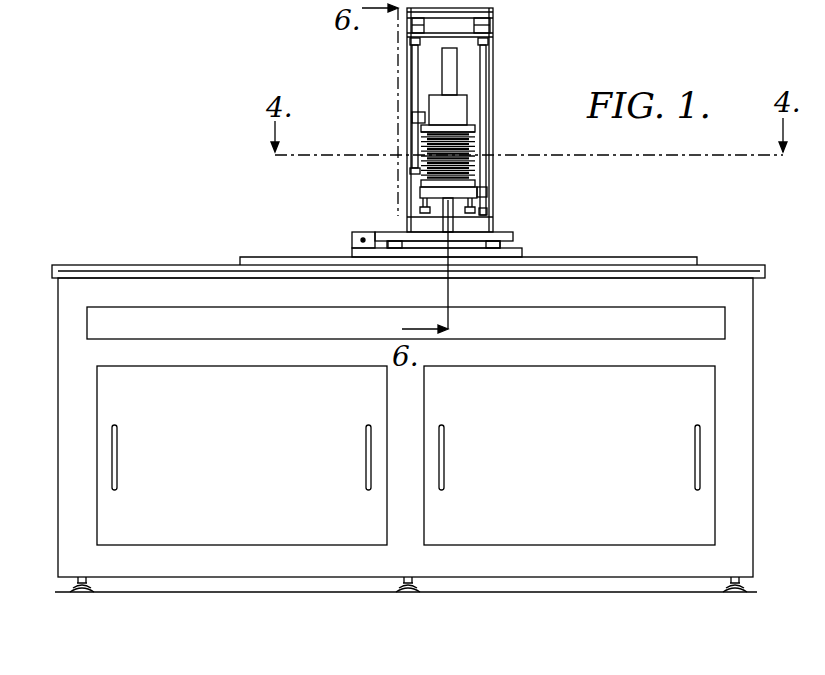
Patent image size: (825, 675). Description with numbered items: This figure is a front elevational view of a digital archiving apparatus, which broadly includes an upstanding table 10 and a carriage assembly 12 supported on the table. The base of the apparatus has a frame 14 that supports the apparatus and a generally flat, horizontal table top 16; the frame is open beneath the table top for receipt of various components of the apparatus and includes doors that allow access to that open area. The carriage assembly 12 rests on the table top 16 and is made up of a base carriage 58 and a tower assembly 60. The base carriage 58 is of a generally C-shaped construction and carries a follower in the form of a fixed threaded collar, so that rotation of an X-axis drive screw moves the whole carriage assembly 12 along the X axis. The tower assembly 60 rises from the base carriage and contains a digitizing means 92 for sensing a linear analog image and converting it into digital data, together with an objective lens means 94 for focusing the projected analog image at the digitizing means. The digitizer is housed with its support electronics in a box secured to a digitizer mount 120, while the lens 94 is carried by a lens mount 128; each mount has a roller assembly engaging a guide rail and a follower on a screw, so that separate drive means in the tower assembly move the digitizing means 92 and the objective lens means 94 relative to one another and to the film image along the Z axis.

The table 10 is at (757, 420).
The carriage assembly 12 is at (330, 0).
The frame 14 is at (64, 467).
The table top 16 is at (140, 266).
The base carriage 58 is at (347, 249).
The tower assembly 60 is at (406, 91).
The digitizing means 92 is at (467, 92).
The objective lens means 94 is at (454, 207).
The digitizer mount 120 is at (452, 127).
The lens mount 128 is at (423, 192).